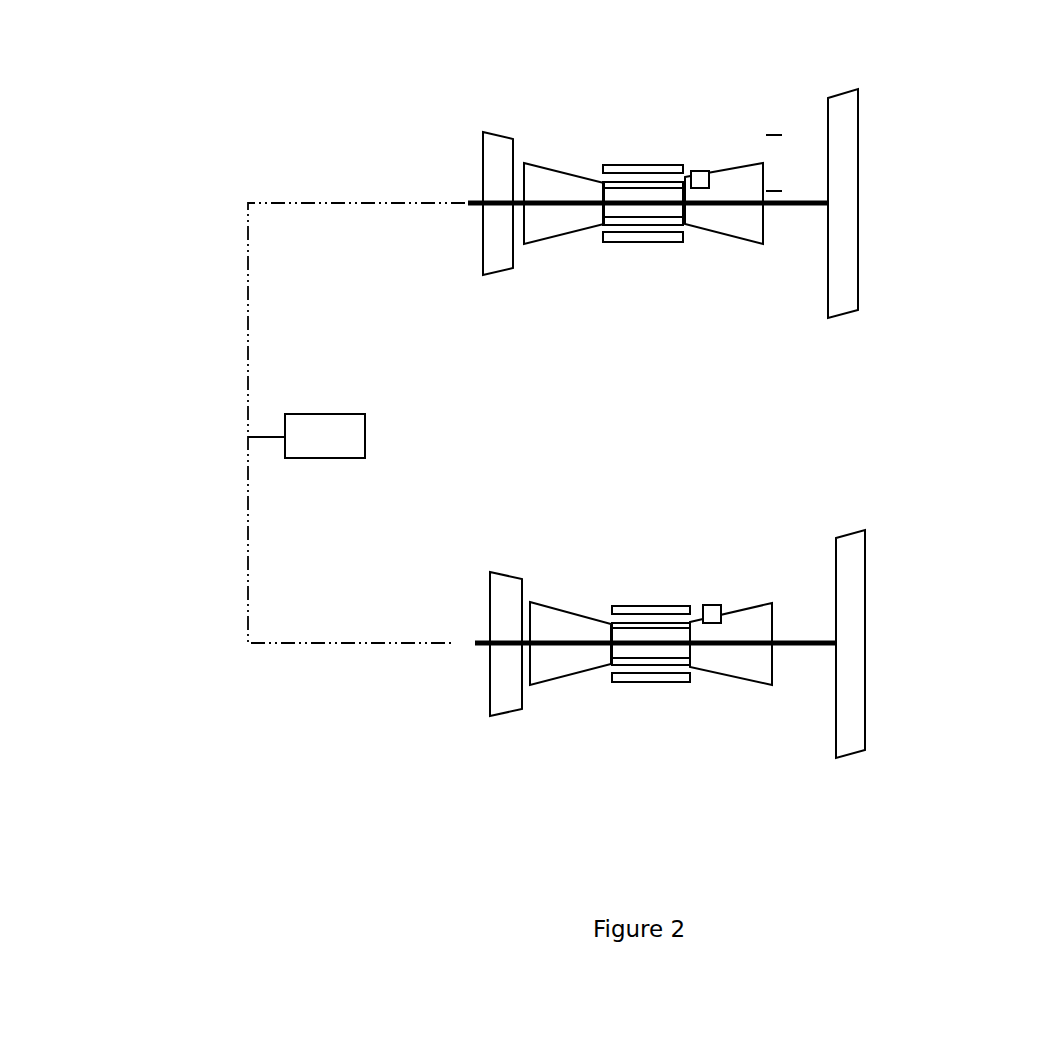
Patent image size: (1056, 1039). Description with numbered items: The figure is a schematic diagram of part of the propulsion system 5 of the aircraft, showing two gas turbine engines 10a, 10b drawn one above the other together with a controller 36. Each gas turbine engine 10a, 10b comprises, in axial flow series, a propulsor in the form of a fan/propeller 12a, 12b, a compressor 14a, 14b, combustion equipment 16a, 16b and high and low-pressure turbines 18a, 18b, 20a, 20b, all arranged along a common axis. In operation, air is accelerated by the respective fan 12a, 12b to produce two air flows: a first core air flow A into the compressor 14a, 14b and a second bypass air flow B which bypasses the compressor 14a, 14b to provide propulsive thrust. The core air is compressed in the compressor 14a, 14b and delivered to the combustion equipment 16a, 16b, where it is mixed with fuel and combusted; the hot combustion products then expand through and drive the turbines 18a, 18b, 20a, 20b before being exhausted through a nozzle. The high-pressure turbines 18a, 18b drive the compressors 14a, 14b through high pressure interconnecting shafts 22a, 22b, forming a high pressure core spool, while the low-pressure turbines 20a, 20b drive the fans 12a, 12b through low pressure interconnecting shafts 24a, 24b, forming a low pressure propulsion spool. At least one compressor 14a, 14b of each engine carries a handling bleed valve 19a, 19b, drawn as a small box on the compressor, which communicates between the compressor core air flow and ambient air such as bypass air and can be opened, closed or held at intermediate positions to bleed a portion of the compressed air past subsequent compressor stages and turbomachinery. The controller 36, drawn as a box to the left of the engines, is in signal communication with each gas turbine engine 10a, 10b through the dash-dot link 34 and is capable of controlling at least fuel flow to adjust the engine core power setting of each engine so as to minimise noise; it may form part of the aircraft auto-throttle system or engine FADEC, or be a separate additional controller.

The propulsion system 5 is at (322, 581).
The communication link 34 is at (238, 272).
The controller 36 is at (325, 414).
The gas turbine engine 10a is at (576, 598).
The gas turbine engine 10b is at (506, 108).
The fan/propeller 12a is at (867, 562).
The fan/propeller 12b is at (860, 127).
The compressor 14a is at (730, 675).
The compressor 14b is at (723, 172).
The combustion equipment 16a is at (670, 683).
The combustion equipment 16b is at (643, 165).
The high-pressure turbine 18a is at (545, 681).
The high-pressure turbine 18b is at (568, 235).
The handling bleed valve 19a is at (712, 605).
The handling bleed valve 19b is at (702, 171).
The low-pressure turbine 20a is at (508, 716).
The low-pressure turbine 20b is at (500, 275).
The high pressure interconnecting shaft 22a is at (618, 683).
The high pressure interconnecting shaft 22b is at (658, 226).
The low pressure interconnecting shaft 24a is at (733, 643).
The low pressure interconnecting shaft 24b is at (790, 208).
The first core air flow A is at (774, 180).
The second bypass air flow B is at (774, 124).